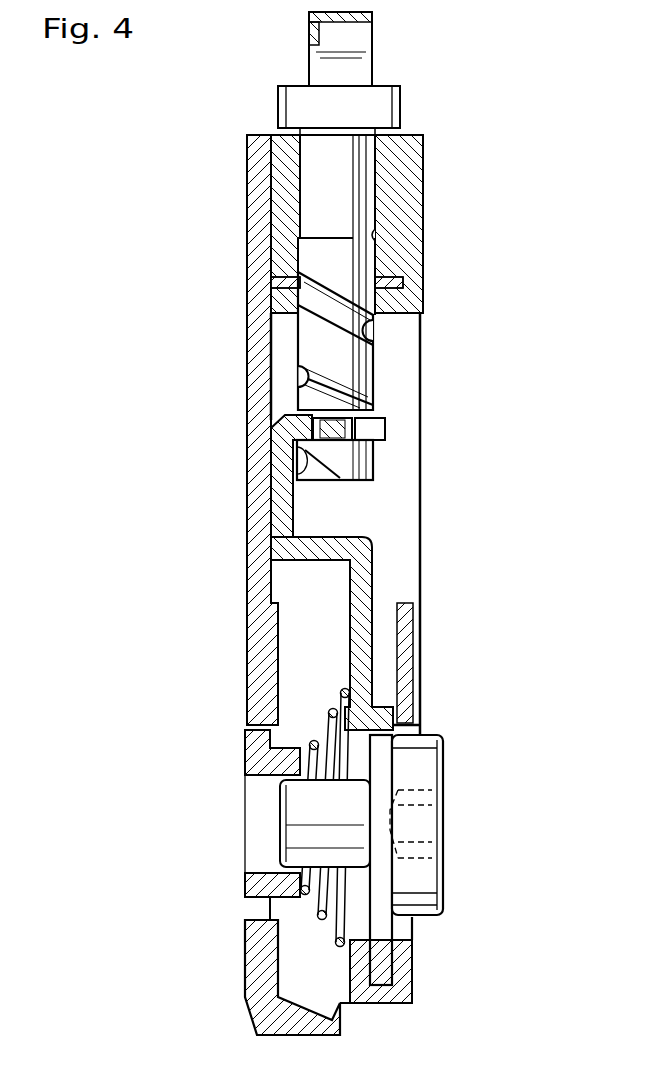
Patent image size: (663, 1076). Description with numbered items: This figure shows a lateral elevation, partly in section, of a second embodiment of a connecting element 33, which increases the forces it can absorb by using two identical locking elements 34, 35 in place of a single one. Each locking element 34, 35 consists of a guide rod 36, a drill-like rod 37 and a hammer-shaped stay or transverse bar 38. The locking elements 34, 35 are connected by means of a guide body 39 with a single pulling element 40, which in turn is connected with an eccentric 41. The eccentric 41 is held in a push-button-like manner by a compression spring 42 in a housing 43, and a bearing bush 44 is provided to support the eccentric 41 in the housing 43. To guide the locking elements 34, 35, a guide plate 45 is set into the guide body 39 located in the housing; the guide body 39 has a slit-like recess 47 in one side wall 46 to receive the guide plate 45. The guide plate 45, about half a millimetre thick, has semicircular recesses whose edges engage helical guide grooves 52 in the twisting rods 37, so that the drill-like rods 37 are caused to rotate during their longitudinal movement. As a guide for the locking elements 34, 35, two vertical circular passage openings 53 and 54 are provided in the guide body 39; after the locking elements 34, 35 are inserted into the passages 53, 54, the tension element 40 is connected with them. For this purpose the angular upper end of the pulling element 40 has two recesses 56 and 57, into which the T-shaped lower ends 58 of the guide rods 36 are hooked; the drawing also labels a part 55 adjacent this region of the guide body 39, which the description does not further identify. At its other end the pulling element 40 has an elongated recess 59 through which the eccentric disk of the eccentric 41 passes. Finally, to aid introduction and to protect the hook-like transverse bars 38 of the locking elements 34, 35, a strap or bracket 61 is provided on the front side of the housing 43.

The connecting element 33 is at (205, 195).
The locking element 34 is at (407, 324).
The locking element 35 is at (392, 370).
The guide rod 36 is at (355, 158).
The drill-like rod 37 is at (355, 395).
The hammer-shaped transverse bar 38 is at (295, 105).
The guide body 39 is at (405, 197).
The pulling element 40 is at (371, 548).
The eccentric 41 is at (447, 733).
The compression spring 42 is at (395, 935).
The housing 43 is at (255, 635).
The bearing bush 44 is at (258, 762).
The guide plate 45 is at (405, 283).
The side wall 46 is at (262, 241).
The slit-like recess 47 is at (266, 283).
The helical guide groove 52 is at (300, 376).
The passage opening 53 is at (447, 244).
The passage opening 54 is at (376, 236).
The chamfered block 55 is at (288, 445).
The recess 56 is at (414, 440).
The recess 57 is at (374, 426).
The T-shaped lower end 58 is at (364, 472).
The elongated recess 59 is at (350, 890).
The bracket 61 is at (378, 16).